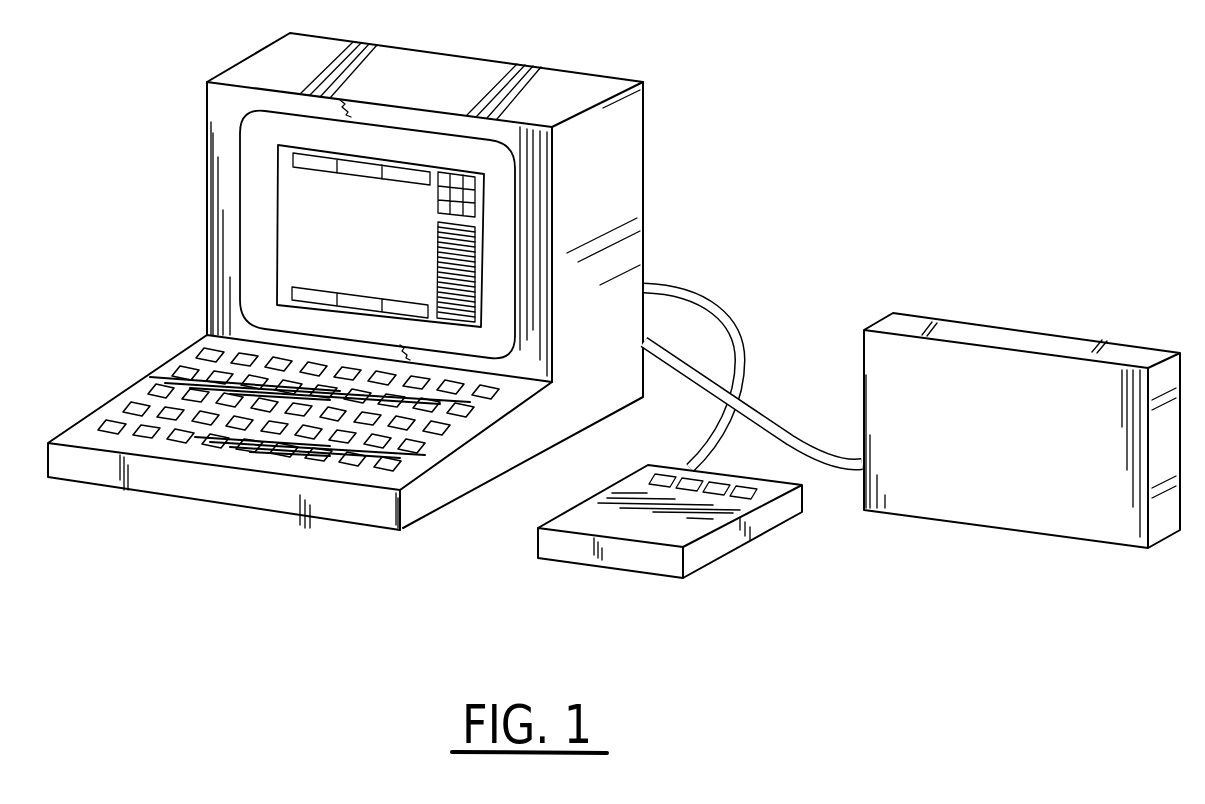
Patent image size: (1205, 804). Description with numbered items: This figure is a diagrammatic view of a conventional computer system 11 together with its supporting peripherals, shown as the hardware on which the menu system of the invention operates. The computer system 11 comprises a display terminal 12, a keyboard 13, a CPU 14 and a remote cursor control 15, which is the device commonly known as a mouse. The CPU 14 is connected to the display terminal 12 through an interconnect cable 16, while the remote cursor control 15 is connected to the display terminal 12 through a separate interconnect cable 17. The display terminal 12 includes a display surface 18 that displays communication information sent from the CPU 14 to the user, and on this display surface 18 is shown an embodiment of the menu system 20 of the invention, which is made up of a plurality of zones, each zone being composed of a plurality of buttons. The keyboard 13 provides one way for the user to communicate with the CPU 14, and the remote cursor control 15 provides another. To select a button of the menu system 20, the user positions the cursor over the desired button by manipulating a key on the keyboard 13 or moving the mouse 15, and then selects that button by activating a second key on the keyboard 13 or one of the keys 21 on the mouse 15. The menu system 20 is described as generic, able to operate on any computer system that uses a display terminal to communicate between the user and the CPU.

The computer system 11 is at (785, 144).
The display terminal 12 is at (646, 133).
The keyboard 13 is at (113, 392).
The CPU 14 is at (1047, 332).
The remote cursor control 15 is at (613, 565).
The interconnect cable 16 is at (770, 424).
The interconnect cable 17 is at (720, 303).
The display surface 18 is at (262, 182).
The menu system 20 is at (420, 163).
The keys 21 is at (718, 510).